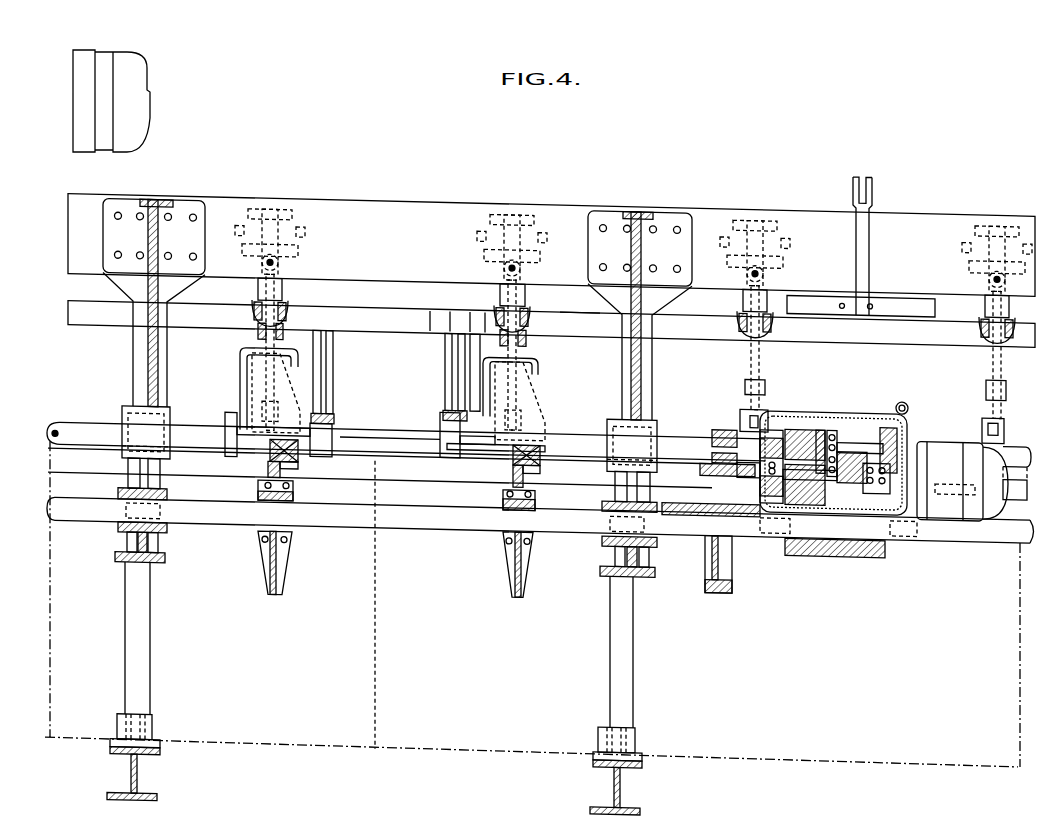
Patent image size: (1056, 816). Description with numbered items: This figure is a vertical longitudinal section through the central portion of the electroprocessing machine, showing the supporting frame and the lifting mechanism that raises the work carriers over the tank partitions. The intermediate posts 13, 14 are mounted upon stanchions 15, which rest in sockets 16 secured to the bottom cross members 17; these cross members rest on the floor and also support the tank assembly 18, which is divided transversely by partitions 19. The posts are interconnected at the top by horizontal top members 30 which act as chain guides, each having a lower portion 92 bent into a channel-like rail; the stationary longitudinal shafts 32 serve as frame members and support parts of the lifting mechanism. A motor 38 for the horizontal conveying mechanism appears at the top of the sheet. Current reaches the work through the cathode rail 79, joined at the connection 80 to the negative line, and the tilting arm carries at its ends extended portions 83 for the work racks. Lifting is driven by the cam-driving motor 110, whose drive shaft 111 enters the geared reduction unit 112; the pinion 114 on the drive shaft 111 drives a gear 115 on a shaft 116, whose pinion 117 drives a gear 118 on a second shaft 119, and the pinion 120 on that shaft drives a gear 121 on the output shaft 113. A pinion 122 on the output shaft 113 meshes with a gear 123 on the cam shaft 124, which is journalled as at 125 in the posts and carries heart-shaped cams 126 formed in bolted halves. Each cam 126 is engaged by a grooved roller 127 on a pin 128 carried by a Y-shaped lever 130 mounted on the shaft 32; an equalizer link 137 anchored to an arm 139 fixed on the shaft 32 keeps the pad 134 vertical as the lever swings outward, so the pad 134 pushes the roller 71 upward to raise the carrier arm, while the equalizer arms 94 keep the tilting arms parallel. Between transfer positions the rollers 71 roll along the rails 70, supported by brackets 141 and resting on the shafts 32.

The motor 38 is at (135, 56).
The horizontal top member 30 is at (391, 177).
The connection 80 is at (873, 182).
The cathode rail 79 is at (897, 282).
The lower portion 92 is at (406, 272).
The roller 71 is at (255, 300).
The equalizer arm 94 is at (262, 309).
The pad 134 is at (286, 301).
The pipe bracket 137 is at (245, 346).
The Y-shaped lever 130 is at (252, 362).
The intermediate post 14 is at (158, 358).
The arm 139 is at (232, 416).
The bracket 141 is at (330, 384).
The arcuate rail 70 is at (597, 299).
The intermediate post 13 is at (650, 354).
The longitudinal shaft 32 is at (395, 422).
The extended portion 83 is at (549, 439).
The grooved roller 127 is at (266, 476).
The pin 128 is at (293, 458).
The cam 126 is at (290, 545).
The journal 125 is at (170, 527).
The output shaft 113 is at (713, 425).
The pinion 122 is at (727, 418).
The gear 121 is at (793, 413).
The geared reduction unit 112 is at (815, 416).
The shaft 116 is at (842, 420).
The pinion 117 is at (858, 425).
The gear 115 is at (876, 424).
The cam-driving motor 110 is at (945, 428).
The drive shaft 111 is at (905, 464).
The pinion 120 is at (790, 471).
The second shaft 119 is at (820, 461).
The gear 118 is at (835, 460).
The pinion 114 is at (883, 469).
The cam shaft 124 is at (960, 517).
The gear 123 is at (716, 563).
The tank assembly 18 is at (50, 624).
The partition 19 is at (382, 659).
The stanchion 15 is at (125, 647).
The socket 16 is at (152, 724).
The bottom cross member 17 is at (138, 779).